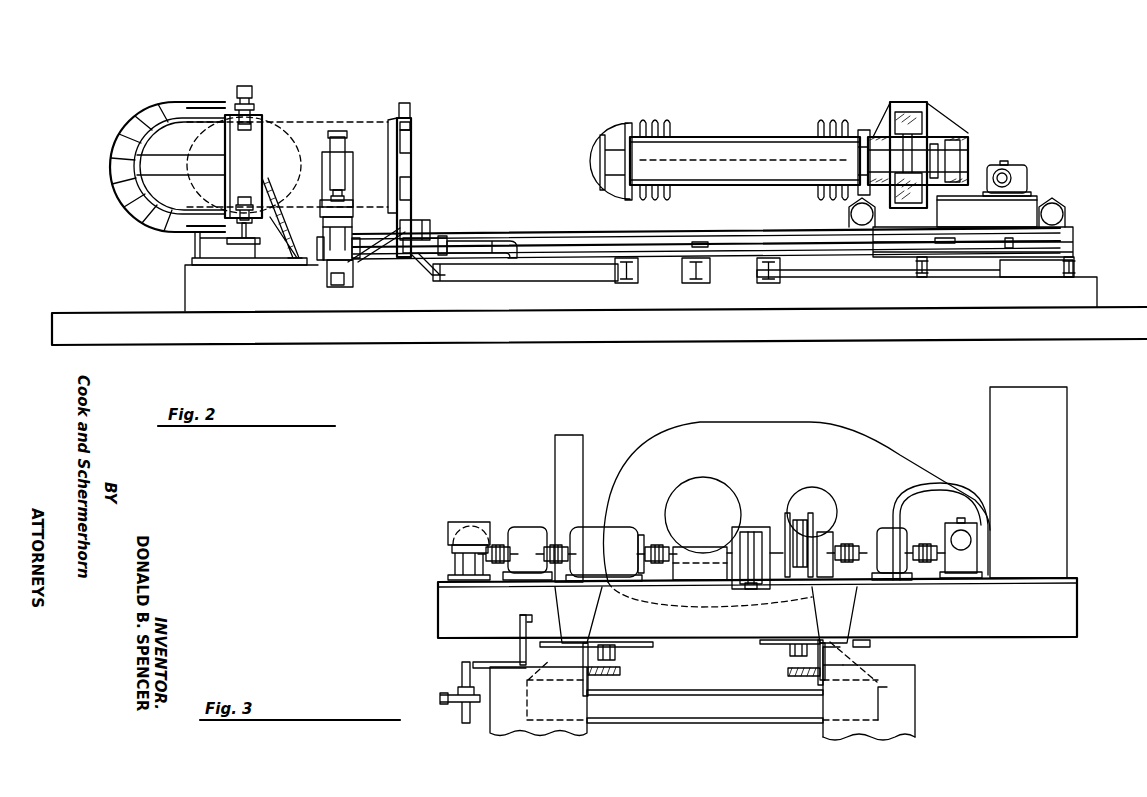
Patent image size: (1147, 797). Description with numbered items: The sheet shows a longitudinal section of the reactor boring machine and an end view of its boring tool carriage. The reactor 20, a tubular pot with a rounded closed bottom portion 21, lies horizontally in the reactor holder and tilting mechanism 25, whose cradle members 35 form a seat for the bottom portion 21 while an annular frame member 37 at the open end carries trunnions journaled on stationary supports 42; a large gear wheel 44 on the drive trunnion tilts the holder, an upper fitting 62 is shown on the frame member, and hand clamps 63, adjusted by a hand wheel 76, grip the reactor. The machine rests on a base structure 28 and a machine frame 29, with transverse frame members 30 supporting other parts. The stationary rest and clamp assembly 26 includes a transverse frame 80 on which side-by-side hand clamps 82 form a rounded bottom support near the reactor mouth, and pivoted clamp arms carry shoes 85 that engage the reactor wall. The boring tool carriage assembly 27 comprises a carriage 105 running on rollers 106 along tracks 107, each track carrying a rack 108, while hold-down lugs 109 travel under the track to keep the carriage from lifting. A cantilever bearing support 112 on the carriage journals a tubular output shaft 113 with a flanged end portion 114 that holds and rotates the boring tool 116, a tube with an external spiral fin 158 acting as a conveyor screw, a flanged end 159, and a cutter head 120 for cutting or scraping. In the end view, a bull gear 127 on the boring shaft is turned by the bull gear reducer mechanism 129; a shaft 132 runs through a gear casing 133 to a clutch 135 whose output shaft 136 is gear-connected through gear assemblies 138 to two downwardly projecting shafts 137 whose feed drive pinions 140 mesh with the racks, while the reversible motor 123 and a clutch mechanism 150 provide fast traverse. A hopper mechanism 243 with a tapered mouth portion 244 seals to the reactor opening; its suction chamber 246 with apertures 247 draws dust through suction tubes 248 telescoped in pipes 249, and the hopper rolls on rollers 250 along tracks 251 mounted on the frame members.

In FIG. 2, the reactor 20 is at (306, 122).
In FIG. 2, the rounded closed bottom portion 21 is at (150, 214).
In FIG. 2, the reactor holder and tilting mechanism 25 is at (190, 94).
In FIG. 2, the stationary rest and clamp assembly 26 is at (339, 131).
In FIG. 2, the boring tool carriage assembly 27 is at (970, 123).
In FIG. 3, the boring tool carriage assembly 27 is at (424, 567).
In FIG. 2, the base structure 28 is at (83, 313).
In FIG. 3, the base structure 28 is at (915, 715).
In FIG. 2, the machine frame 29 is at (183, 272).
In FIG. 3, the machine frame 29 is at (920, 672).
In FIG. 2, the transverse frame members 30 is at (803, 276).
In FIG. 3, the transverse frame members 30 is at (707, 712).
In FIG. 2, the cradle members 35 is at (148, 150).
In FIG. 2, the annular frame member 37 is at (258, 148).
In FIG. 2, the stationary supports 42 is at (194, 244).
In FIG. 2, the gear wheel 44 is at (282, 118).
In FIG. 2, the upper pivot bolt 62 is at (244, 86).
In FIG. 2, the hand clamps 63 is at (252, 216).
In FIG. 2, the hand wheel 76 is at (243, 246).
In FIG. 2, the transverse frame 80 is at (333, 172).
In FIG. 2, the hand clamps 82 is at (330, 266).
In FIG. 2, the shoes 85 is at (345, 152).
In FIG. 2, the carriage 105 is at (1064, 205).
In FIG. 3, the carriage 105 is at (1080, 578).
In FIG. 2, the rollers 106 is at (1064, 222).
In FIG. 3, the rollers 106 is at (585, 632).
In FIG. 2, the tracks 107 is at (757, 236).
In FIG. 3, the tracks 107 is at (525, 660).
In FIG. 2, the rack 108 is at (614, 242).
In FIG. 3, the rack 108 is at (605, 688).
In FIG. 3, the hold-down lugs 109 is at (545, 628).
In FIG. 2, the cantilever bearing support 112 is at (972, 158).
In FIG. 3, the cantilever bearing support 112 is at (718, 482).
In FIG. 2, the tubular output shaft 113 is at (946, 148).
In FIG. 2, the flanged end portion 114 is at (864, 132).
In FIG. 2, the boring tool 116 is at (740, 132).
In FIG. 2, the cutter head 120 is at (612, 132).
In FIG. 3, the motor 123 is at (447, 530).
In FIG. 2, the bull gear 127 is at (904, 112).
In FIG. 3, the bull gear reducer mechanism 129 is at (905, 442).
In FIG. 3, the shaft 132 is at (935, 580).
In FIG. 3, the gear casing 133 is at (975, 548).
In FIG. 3, the clutch 135 is at (897, 578).
In FIG. 3, the output shaft 136 is at (673, 540).
In FIG. 2, the downwardly projecting shafts 137 is at (1002, 237).
In FIG. 3, the downwardly projecting shafts 137 is at (615, 664).
In FIG. 2, the gear assemblies 138 is at (1025, 170).
In FIG. 3, the gear assemblies 138 is at (578, 530).
In FIG. 2, the feed drive pinions 140 is at (1010, 248).
In FIG. 3, the feed drive pinions 140 is at (622, 671).
In FIG. 3, the clutch mechanism 150 is at (520, 530).
In FIG. 2, the external spiral fin 158 is at (652, 127).
In FIG. 2, the flanged end 159 is at (850, 128).
In FIG. 2, the hopper mechanism 243 is at (412, 158).
In FIG. 2, the tapered mouth portion 244 is at (398, 117).
In FIG. 2, the suction chamber 246 is at (410, 122).
In FIG. 2, the apertures 247 is at (411, 148).
In FIG. 2, the suction tubes 248 is at (441, 238).
In FIG. 2, the pipes 249 is at (477, 243).
In FIG. 2, the rollers 250 is at (441, 270).
In FIG. 2, the tracks 251 is at (565, 274).